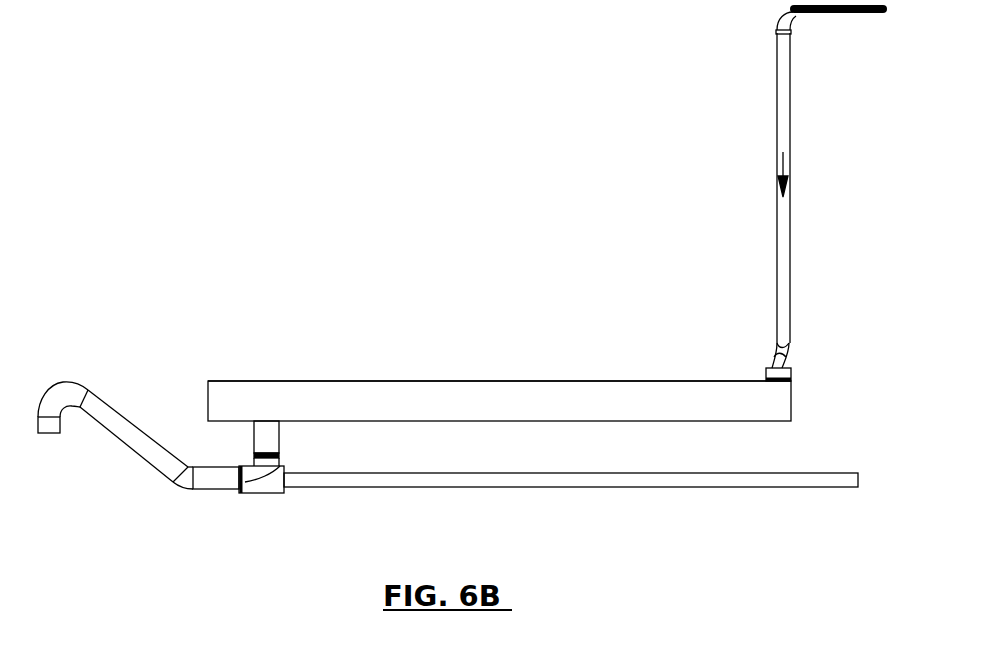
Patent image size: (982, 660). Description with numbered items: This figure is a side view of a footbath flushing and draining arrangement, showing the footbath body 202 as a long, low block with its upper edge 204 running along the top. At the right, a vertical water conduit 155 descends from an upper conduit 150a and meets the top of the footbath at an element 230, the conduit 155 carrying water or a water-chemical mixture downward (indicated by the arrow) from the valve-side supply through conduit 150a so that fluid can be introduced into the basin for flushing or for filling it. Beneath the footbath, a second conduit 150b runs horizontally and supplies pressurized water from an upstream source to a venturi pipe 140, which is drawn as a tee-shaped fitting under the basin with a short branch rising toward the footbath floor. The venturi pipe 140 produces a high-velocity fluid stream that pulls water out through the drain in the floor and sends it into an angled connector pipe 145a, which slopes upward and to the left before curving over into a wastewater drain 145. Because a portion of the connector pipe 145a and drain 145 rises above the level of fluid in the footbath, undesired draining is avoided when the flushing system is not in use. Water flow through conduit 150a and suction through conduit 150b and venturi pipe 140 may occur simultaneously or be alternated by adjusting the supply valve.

The venturi pipe 140 is at (262, 477).
The wastewater drain 145 is at (58, 395).
The angled connector pipe 145a is at (135, 437).
The conduit 150a is at (842, 13).
The conduit 150b is at (638, 478).
The water conduit 155 is at (785, 278).
The slab 202 is at (428, 398).
The top surface of slab 204 is at (583, 381).
The fitting 230 is at (780, 375).